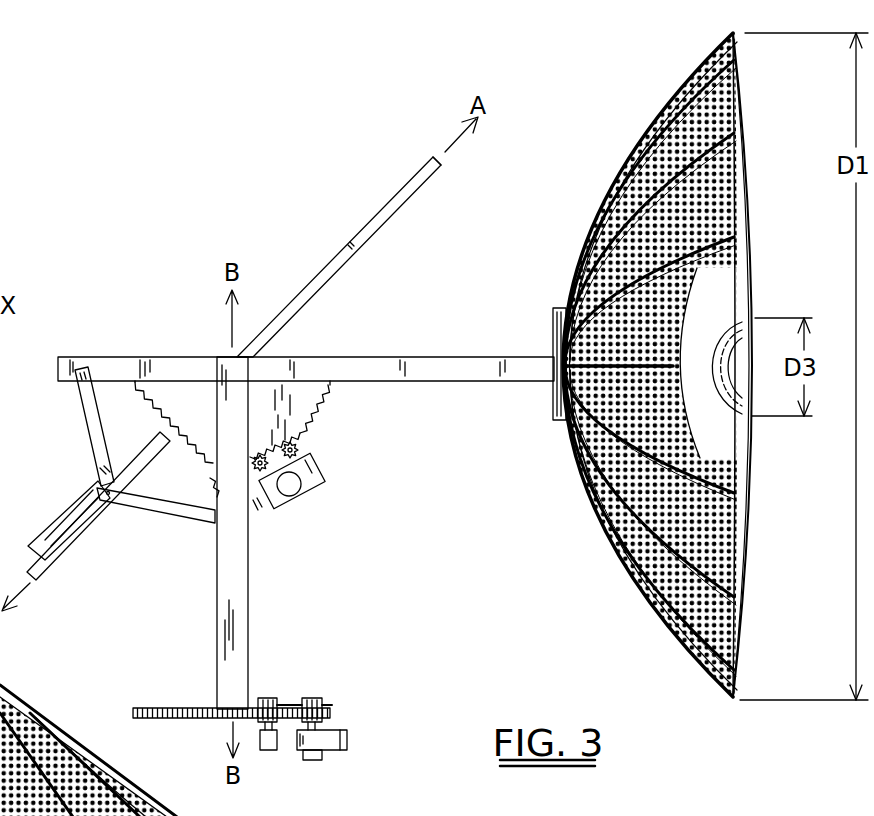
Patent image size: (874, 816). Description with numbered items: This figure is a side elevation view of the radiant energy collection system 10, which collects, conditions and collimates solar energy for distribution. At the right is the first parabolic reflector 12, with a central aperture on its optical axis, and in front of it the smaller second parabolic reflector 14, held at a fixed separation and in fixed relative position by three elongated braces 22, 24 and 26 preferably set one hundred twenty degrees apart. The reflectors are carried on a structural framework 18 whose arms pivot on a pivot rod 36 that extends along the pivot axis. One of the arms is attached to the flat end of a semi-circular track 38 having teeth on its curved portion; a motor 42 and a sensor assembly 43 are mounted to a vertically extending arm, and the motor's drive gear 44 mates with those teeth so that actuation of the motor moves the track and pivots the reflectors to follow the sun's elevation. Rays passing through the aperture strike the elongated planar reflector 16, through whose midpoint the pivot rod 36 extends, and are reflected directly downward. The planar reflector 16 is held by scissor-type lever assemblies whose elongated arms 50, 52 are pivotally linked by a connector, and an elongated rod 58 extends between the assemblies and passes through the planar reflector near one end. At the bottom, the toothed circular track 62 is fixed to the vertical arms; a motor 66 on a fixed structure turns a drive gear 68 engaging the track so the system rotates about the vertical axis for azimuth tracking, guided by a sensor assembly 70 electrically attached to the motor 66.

The radiant energy collection system 10 is at (167, 189).
The first parabolic reflector 12 is at (691, 365).
The second parabolic reflector 14 is at (748, 412).
The planar reflector 16 is at (433, 175).
The structural framework 18 is at (317, 499).
The elongated brace 22 is at (752, 262).
The elongated brace 24 is at (748, 172).
The elongated brace 26 is at (745, 505).
The pivot rod 36 is at (232, 372).
The semi-circular track 38 is at (280, 365).
The motor 42 is at (303, 440).
The sensor assembly 43 is at (300, 483).
The drive gear 44 is at (310, 445).
The elongated arm 50 is at (83, 408).
The elongated arm 52 is at (140, 513).
The elongated rod 58 is at (110, 478).
The circular track 62 is at (196, 708).
The motor 66 is at (330, 736).
The drive gear 68 is at (310, 700).
The sensor assembly 70 is at (320, 757).